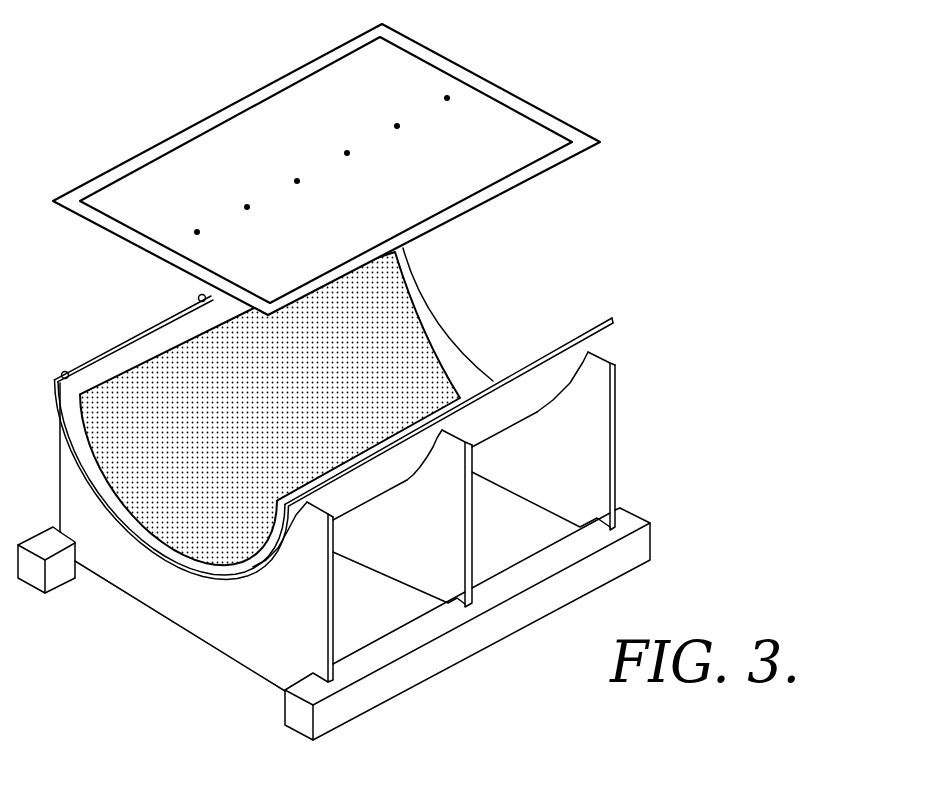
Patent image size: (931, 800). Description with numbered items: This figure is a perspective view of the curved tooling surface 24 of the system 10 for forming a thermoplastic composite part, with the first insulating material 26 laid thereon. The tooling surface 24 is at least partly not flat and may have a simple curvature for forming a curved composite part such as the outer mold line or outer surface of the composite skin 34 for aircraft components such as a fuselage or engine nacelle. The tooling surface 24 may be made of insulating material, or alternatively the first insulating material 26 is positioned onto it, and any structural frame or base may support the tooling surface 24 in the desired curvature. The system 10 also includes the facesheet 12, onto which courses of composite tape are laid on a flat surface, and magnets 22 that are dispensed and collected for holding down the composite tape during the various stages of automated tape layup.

The system 10 is at (670, 229).
The facesheet 12 is at (543, 163).
The magnets 22 is at (447, 95).
The composite skin 34 is at (518, 124).
The tooling surface 24 is at (608, 362).
The first insulating material 26 is at (425, 333).